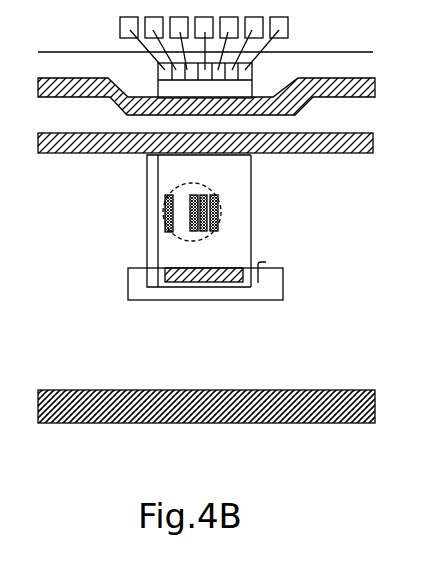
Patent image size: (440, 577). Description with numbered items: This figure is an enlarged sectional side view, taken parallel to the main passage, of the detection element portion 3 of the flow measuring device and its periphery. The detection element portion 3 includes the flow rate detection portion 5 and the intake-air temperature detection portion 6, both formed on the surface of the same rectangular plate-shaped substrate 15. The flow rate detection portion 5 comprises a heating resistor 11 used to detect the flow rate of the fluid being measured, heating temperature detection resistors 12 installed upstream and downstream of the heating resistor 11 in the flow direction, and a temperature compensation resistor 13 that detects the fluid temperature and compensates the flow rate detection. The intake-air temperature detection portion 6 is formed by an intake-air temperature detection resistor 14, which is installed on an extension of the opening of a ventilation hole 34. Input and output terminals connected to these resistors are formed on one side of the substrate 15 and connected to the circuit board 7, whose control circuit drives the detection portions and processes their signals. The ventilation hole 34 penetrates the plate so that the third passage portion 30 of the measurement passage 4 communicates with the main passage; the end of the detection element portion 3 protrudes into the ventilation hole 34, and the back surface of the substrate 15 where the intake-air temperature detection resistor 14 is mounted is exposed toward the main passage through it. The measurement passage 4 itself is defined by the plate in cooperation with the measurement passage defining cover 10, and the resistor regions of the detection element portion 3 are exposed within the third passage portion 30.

The circuit board 7 is at (350, 37).
The measurement passage 4 is at (73, 278).
The temperature compensation resistor 13 is at (145, 215).
The detection element portion 3 is at (147, 222).
The substrate 15 is at (237, 247).
The intake-air temperature detection resistor 14 is at (145, 263).
The ventilation hole 34 is at (272, 287).
The intake-air temperature detection portion 6 is at (262, 272).
The flow rate detection portion 5 is at (177, 183).
The heating resistor 11 is at (183, 185).
The heating temperature detection resistors 12 is at (172, 193).
The third passage portion 30 is at (325, 348).
The measurement passage defining cover 10 is at (353, 407).